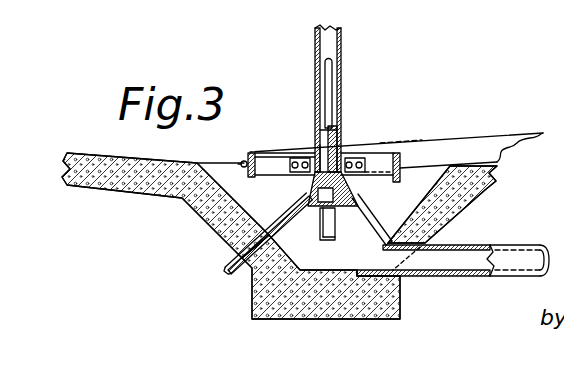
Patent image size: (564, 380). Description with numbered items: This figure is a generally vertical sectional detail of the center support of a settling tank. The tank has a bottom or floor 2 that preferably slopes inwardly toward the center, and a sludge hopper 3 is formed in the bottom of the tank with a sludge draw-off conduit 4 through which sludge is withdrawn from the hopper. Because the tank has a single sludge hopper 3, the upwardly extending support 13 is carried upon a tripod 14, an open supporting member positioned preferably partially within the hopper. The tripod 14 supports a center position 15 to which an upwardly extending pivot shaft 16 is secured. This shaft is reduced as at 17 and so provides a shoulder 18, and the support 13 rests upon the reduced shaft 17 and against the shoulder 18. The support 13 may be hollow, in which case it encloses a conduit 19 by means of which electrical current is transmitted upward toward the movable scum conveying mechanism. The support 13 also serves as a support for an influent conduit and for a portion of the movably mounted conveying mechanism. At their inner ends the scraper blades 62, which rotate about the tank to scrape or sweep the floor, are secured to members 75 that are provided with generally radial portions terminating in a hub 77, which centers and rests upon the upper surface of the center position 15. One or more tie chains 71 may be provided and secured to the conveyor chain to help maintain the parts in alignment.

The bottom or floor 2 is at (122, 180).
The sludge hopper 3 is at (334, 255).
The sludge draw-off conduit 4 is at (478, 266).
The support 13 is at (341, 41).
The tripod 14 is at (273, 231).
The center position 15 is at (342, 209).
The pivot shaft 16 is at (336, 195).
The reduced portion of shaft 17 is at (338, 129).
The shoulder 18 is at (317, 144).
The conduit 19 is at (330, 72).
The blade 62 is at (483, 142).
The tie chain 71 is at (416, 140).
The member 75 is at (259, 156).
The hub 77 is at (337, 187).